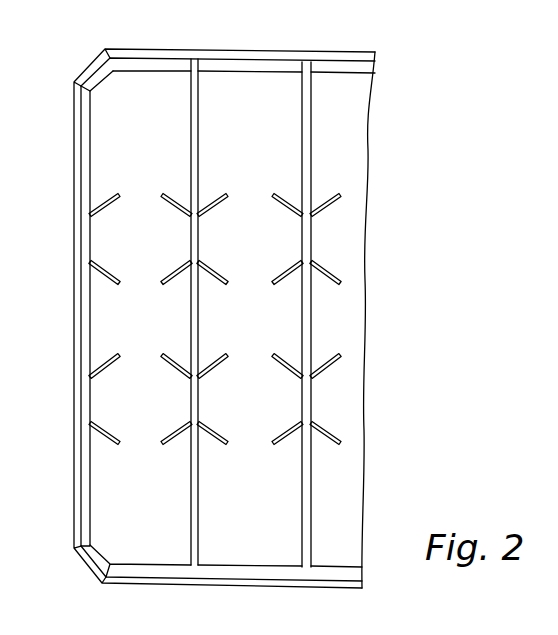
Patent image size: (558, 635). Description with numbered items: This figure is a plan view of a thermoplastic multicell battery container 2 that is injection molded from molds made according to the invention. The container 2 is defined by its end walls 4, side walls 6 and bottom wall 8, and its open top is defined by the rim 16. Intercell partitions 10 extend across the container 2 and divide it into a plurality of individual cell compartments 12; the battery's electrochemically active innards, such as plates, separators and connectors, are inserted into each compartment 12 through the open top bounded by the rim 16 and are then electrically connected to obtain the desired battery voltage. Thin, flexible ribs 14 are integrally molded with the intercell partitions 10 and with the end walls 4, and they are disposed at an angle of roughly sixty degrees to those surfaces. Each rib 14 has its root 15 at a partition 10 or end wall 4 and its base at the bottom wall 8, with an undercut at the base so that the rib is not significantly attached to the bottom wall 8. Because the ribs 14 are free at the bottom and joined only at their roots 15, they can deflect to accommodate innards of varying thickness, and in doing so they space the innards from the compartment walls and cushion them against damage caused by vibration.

The battery container 2 is at (73, 148).
The end wall 4 is at (78, 318).
The side wall 6 is at (343, 73).
The bottom wall 8 is at (352, 140).
The intercell partition 10 is at (303, 143).
The cell compartment 12 is at (330, 508).
The rib 14 is at (287, 201).
The root 15 is at (312, 260).
The rim 16 is at (222, 55).